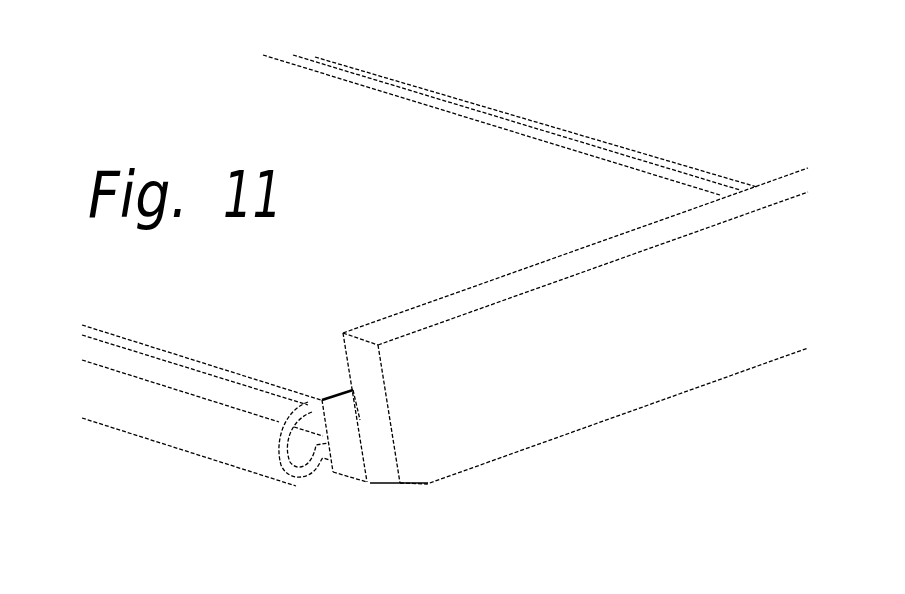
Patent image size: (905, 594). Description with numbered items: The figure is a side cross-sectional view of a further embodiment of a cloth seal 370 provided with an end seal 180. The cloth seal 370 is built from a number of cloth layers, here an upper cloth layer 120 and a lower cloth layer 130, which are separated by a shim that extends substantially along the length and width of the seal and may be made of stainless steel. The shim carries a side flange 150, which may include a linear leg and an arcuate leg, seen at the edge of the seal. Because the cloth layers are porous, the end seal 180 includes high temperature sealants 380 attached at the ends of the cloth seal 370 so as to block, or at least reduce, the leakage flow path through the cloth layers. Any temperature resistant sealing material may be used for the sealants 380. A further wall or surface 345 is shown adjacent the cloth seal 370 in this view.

The cloth seal 370 is at (488, 62).
The upper cloth layer 120 is at (583, 170).
The side wall 345 is at (612, 407).
The side flange 150 is at (160, 444).
The lower cloth layer 130 is at (320, 465).
The high temperature sealant 380 is at (355, 480).
The end seal 180 is at (345, 493).